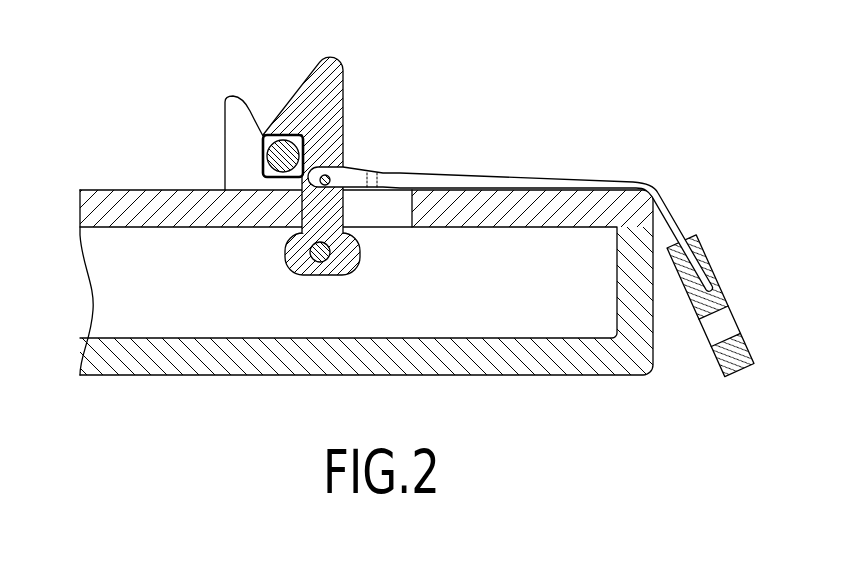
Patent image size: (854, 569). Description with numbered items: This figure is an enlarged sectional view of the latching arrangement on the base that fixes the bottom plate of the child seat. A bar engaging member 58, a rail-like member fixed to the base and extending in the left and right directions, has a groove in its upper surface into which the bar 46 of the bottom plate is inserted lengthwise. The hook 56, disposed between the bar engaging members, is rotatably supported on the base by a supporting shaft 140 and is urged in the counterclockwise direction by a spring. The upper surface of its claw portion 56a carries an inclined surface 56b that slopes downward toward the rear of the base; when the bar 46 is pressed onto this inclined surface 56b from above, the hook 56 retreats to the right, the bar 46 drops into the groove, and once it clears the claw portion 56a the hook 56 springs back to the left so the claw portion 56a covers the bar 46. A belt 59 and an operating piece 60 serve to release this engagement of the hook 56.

The bar 46 is at (265, 161).
The hook 56 is at (352, 56).
The claw portion 56a is at (279, 122).
The inclined surface 56b is at (281, 117).
The bar engaging member 58 is at (222, 117).
The belt 59 is at (550, 178).
The operating piece 60 is at (713, 260).
The supporting shaft 140 is at (345, 272).